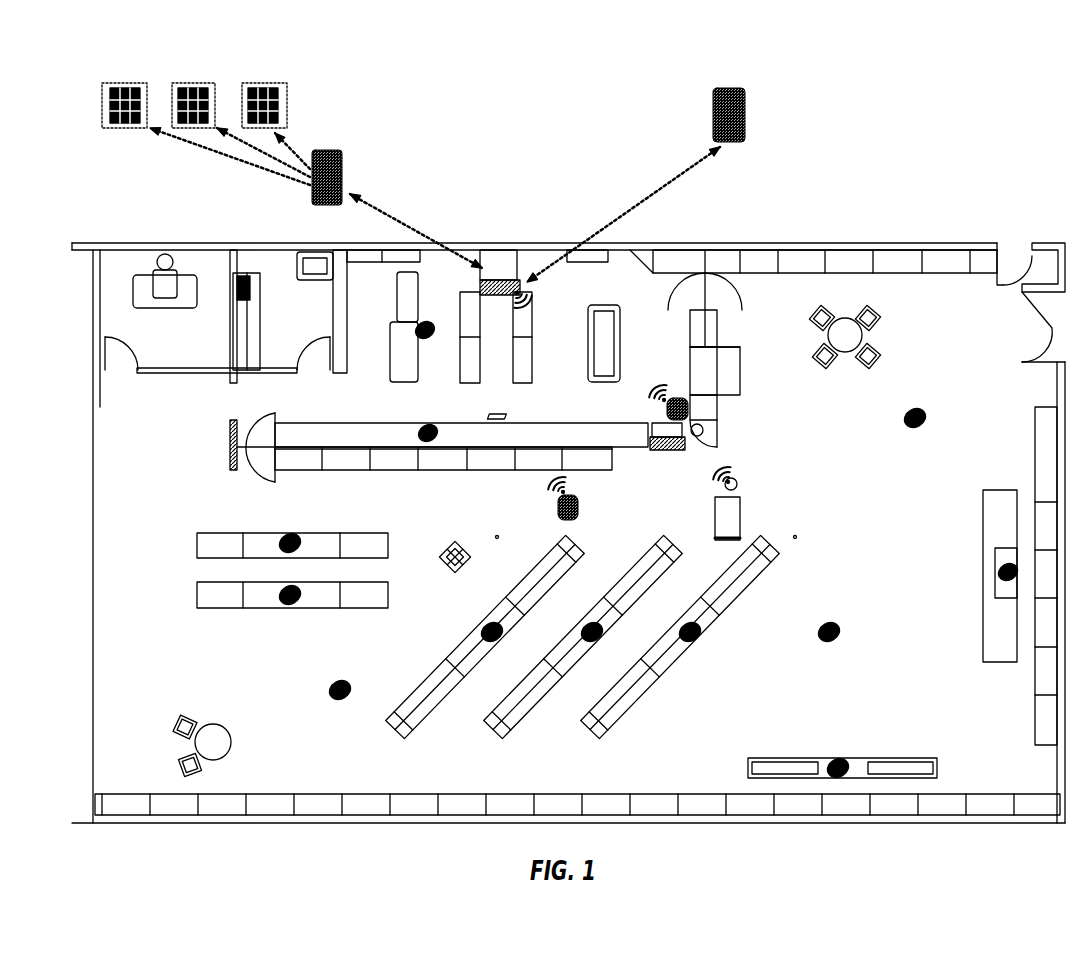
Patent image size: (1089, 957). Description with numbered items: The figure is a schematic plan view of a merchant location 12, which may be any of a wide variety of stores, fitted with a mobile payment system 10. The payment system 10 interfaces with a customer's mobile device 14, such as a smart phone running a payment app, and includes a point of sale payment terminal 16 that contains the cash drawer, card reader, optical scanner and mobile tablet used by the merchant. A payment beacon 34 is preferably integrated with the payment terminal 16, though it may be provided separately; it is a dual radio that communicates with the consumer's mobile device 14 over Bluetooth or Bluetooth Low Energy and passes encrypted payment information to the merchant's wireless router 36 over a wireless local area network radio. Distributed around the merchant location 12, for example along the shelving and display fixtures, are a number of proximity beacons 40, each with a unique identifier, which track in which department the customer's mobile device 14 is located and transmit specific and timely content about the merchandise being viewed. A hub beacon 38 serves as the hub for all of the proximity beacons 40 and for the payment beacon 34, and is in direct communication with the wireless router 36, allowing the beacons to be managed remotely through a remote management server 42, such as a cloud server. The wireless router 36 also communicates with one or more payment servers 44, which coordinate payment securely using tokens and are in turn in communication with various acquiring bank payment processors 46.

The payment system 10 is at (608, 97).
The merchant location 12 is at (923, 310).
The mobile device 14 is at (740, 484).
The point of sale payment terminal 16 is at (665, 453).
The payment beacon 34 is at (683, 398).
The wireless router 36 is at (497, 262).
The hub beacon 38 is at (556, 510).
The proximity beacon 40 is at (292, 535).
The remote management server 42 is at (728, 88).
The payment server 44 is at (330, 152).
The acquiring bank payment processor 46 is at (262, 84).